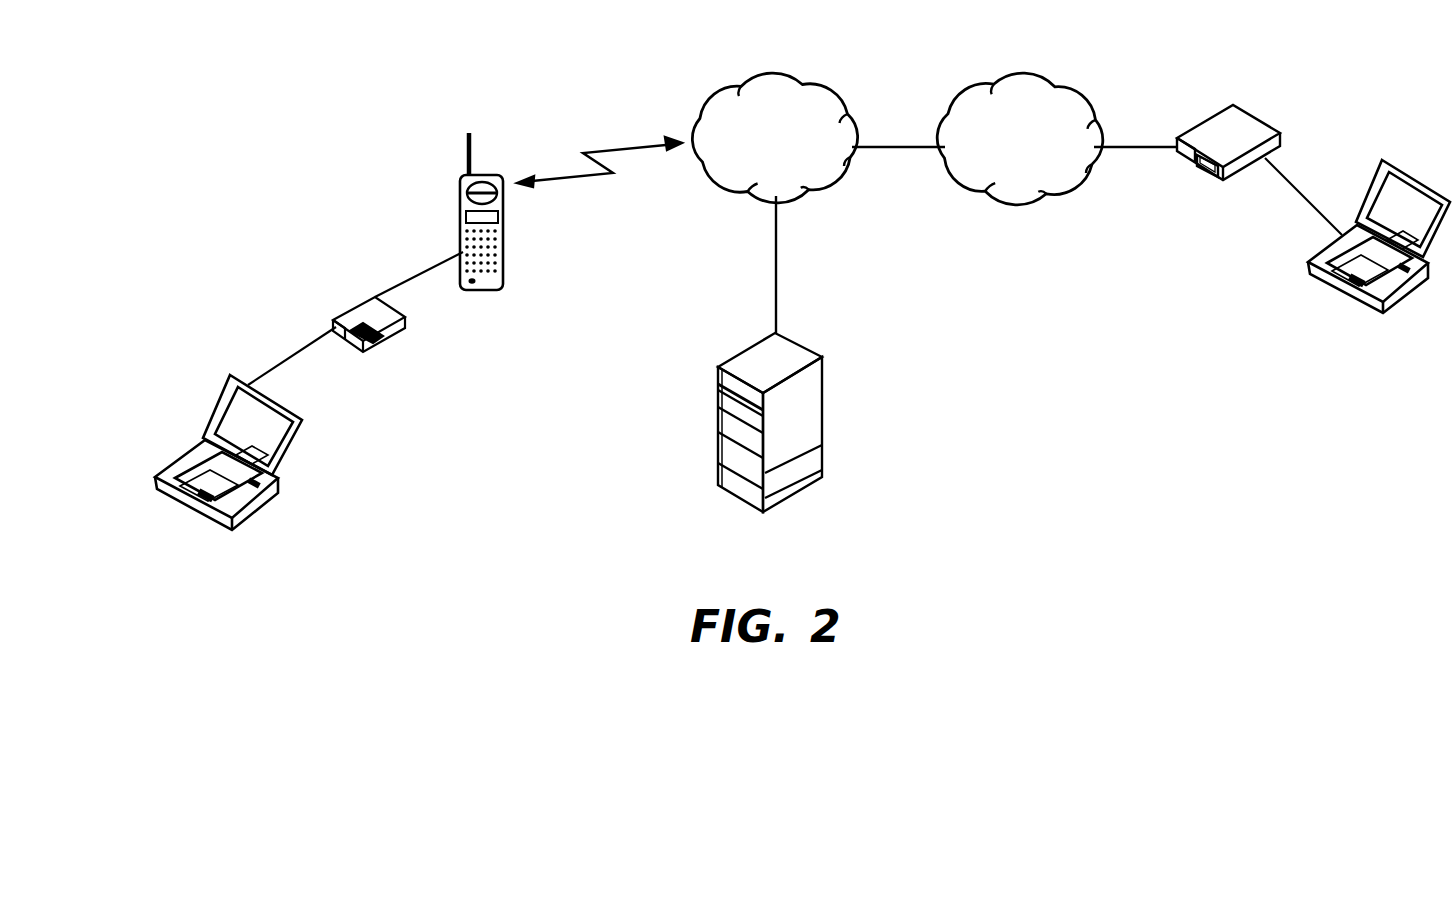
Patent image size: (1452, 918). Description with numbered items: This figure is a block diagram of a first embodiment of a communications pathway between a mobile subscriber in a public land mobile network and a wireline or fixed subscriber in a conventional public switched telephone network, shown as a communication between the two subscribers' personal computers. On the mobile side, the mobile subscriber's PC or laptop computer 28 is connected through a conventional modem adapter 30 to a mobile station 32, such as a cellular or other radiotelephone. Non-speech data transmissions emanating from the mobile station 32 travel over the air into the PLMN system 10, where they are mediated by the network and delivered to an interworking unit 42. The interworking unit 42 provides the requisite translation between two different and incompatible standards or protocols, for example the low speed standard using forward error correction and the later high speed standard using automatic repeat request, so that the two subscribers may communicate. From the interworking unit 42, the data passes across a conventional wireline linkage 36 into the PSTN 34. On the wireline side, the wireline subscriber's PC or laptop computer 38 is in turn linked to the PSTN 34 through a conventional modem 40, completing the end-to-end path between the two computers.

The PLMN system 10 is at (707, 105).
The PC or laptop computer 28 is at (170, 447).
The modem adapter 30 is at (355, 302).
The mobile station 32 is at (462, 223).
The PSTN 34 is at (1062, 79).
The wireline linkage 36 is at (890, 145).
The PC or laptop computer 38 is at (1318, 282).
The modem 40 is at (1270, 122).
The interworking unit 42 is at (824, 453).